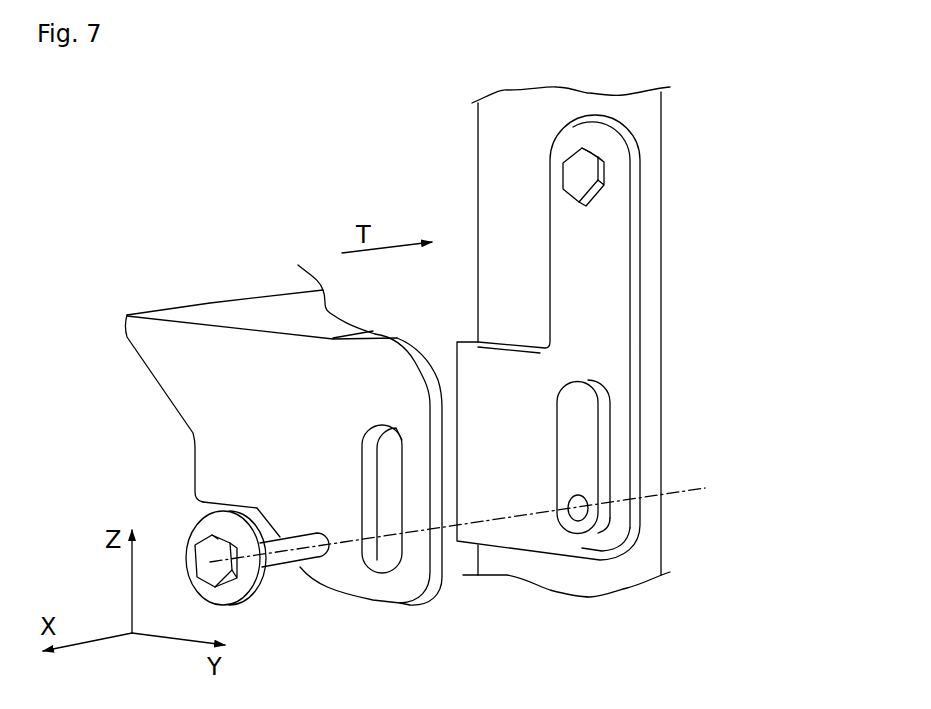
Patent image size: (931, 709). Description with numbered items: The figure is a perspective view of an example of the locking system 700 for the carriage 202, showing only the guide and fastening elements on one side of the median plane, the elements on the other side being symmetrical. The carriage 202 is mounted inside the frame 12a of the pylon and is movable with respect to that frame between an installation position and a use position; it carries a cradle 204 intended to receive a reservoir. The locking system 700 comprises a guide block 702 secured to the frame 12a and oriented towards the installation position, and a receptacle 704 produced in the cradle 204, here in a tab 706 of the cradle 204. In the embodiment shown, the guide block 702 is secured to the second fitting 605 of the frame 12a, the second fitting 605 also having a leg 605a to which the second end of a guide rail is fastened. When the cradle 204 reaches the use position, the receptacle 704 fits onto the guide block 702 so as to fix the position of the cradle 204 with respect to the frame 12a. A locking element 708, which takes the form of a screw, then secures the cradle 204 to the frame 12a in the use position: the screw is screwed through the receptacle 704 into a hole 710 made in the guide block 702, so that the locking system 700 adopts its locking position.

The locking system 700 is at (300, 209).
The frame 12a is at (650, 137).
The second fitting 605 is at (575, 337).
The leg 605a is at (476, 341).
The guide block 702 is at (587, 445).
The hole 710 is at (585, 512).
The tab 706 is at (244, 465).
The cradle 204 is at (157, 333).
The carriage 202 is at (160, 405).
The receptacle 704 is at (390, 562).
The locking element 708 is at (190, 543).